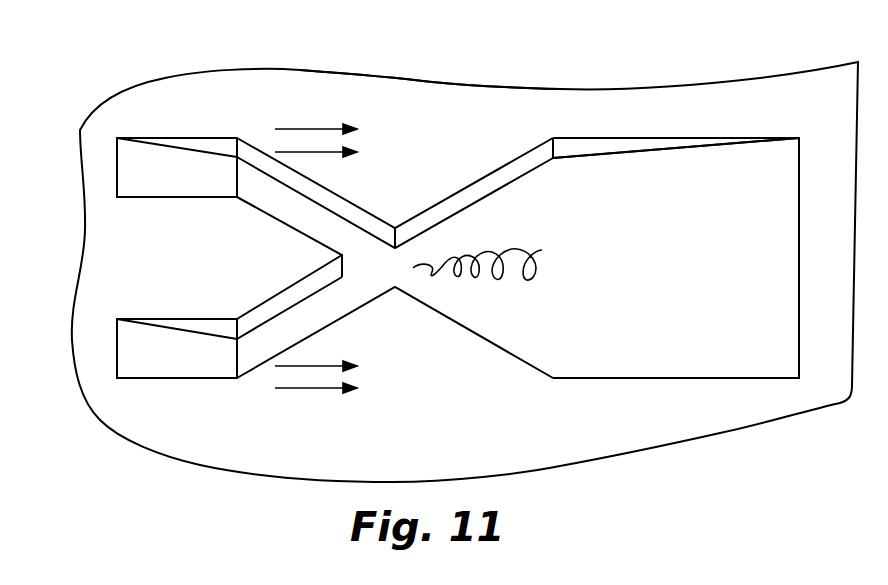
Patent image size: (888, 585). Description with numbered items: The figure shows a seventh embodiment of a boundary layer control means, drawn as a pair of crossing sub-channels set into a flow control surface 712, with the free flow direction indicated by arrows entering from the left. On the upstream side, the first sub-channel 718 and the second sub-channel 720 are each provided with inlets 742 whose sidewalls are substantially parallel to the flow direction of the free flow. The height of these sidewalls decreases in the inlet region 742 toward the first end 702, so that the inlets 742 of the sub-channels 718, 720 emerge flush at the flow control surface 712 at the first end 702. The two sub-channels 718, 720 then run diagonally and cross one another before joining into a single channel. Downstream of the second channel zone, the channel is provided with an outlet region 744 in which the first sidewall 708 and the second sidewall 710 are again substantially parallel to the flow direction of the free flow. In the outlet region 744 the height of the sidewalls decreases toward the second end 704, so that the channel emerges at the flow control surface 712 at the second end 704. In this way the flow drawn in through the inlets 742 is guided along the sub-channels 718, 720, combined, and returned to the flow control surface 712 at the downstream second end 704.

The first end 702 is at (127, 283).
The second end 704 is at (800, 308).
The first sidewall 708 is at (587, 145).
The second sidewall 710 is at (600, 369).
The flow control surface 712 is at (432, 100).
The first sub-channel 718 is at (302, 218).
The second sub-channel 720 is at (302, 320).
The inlets 742 is at (140, 178).
The outlet region 744 is at (697, 340).